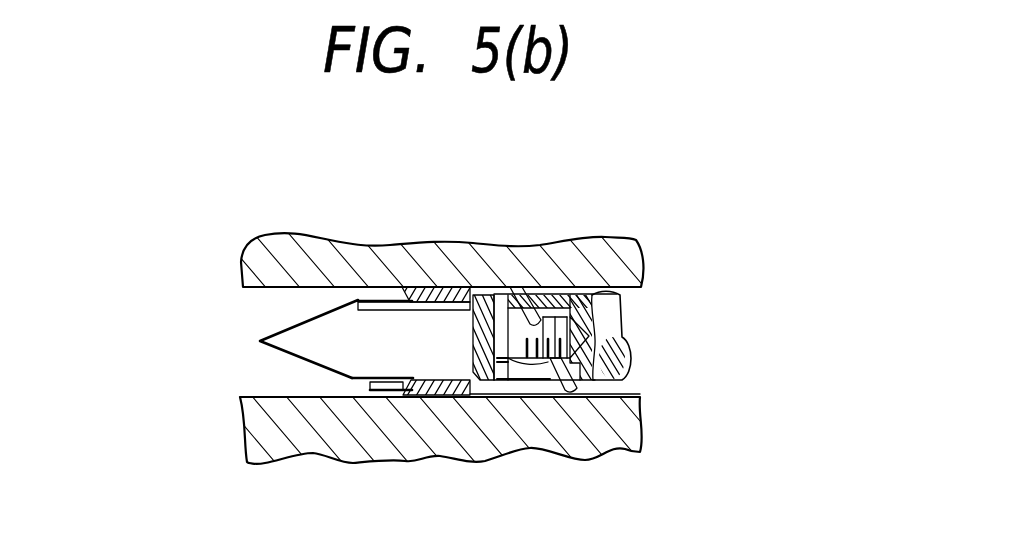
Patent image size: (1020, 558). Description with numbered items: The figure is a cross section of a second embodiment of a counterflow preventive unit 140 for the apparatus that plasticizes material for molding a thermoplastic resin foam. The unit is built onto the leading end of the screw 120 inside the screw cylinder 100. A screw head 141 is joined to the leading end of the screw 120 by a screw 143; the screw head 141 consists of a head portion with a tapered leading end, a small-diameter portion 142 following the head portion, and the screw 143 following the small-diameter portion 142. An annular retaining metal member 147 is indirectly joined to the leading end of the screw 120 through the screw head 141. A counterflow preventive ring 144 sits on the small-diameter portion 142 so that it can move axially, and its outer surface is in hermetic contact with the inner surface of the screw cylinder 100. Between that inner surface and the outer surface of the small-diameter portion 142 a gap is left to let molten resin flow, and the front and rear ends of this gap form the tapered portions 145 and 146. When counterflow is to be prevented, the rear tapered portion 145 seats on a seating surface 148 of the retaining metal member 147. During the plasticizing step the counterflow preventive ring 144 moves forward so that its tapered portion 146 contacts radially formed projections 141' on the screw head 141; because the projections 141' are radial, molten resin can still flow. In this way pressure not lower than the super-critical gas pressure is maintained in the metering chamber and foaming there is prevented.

The screw cylinder 100 is at (587, 240).
The screw 120 is at (621, 322).
The counterflow preventive unit 140 is at (577, 228).
The screw head 141 is at (263, 348).
The projections 141' is at (384, 342).
The small-diameter portion 142 is at (440, 360).
The screw 143 is at (603, 394).
The counterflow preventive ring 144 is at (418, 290).
The rear tapered portion 145 is at (500, 394).
The front tapered portion 146 is at (405, 407).
The annular retaining metal member 147 is at (514, 288).
The seating surface 148 is at (483, 295).